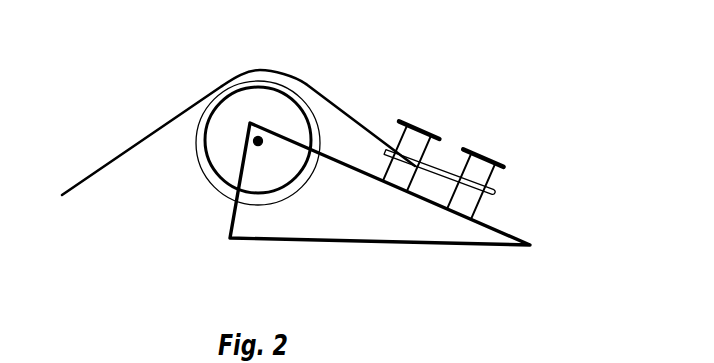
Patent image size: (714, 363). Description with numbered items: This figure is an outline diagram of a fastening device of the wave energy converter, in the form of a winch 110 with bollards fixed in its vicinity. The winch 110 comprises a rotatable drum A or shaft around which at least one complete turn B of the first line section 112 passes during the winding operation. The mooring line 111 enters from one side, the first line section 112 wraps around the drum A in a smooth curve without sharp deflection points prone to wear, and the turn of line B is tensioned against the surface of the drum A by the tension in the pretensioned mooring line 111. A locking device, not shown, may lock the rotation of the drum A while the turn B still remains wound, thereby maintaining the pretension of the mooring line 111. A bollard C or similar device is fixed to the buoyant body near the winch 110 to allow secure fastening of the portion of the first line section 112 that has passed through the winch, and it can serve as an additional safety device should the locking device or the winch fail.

The winch 110 is at (207, 53).
The mooring line 111 is at (122, 138).
The first line section 112 is at (337, 97).
The rotatable drum A is at (207, 145).
The complete turn B is at (215, 185).
The bollard C is at (457, 125).